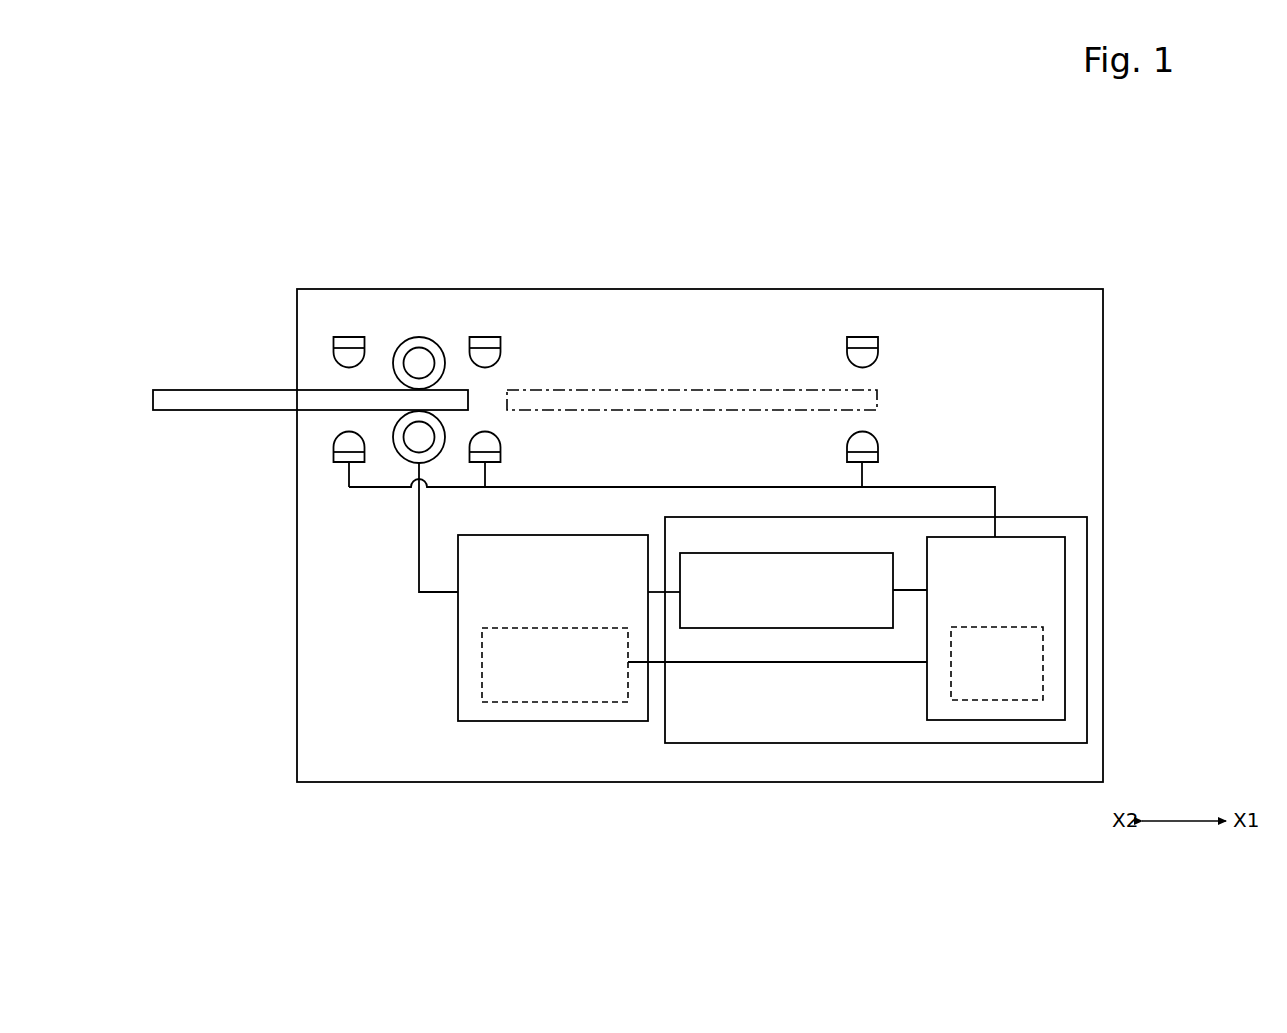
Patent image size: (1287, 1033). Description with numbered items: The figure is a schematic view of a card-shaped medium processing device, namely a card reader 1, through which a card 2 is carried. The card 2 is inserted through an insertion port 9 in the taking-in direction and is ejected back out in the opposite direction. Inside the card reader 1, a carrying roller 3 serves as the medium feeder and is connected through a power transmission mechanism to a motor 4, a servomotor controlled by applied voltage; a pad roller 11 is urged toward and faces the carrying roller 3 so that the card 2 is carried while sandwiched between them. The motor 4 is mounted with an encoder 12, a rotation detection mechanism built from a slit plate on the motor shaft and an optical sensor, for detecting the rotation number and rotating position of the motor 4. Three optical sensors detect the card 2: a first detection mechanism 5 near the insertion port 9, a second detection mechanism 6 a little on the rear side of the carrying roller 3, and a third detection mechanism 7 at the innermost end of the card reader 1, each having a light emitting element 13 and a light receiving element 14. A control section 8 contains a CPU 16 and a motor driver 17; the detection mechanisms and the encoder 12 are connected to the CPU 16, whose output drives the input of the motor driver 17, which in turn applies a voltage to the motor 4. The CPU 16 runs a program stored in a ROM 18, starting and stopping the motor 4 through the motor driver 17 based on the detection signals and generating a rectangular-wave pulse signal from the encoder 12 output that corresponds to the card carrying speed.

The card reader 1 is at (1067, 184).
The card 2 is at (196, 389).
The carrying roller 3 is at (414, 465).
The motor 4 is at (672, 649).
The first detection mechanism 5 is at (372, 328).
The second detection mechanism 6 is at (518, 342).
The third detection mechanism 7 is at (894, 338).
The control section 8 is at (904, 604).
The insertion port 9 is at (278, 428).
The pad roller 11 is at (419, 337).
The encoder 12 is at (557, 703).
The light emitting element 13 is at (333, 350).
The light receiving element 14 is at (334, 447).
The CPU 16 is at (1035, 628).
The motor driver 17 is at (765, 628).
The ROM 18 is at (1043, 665).